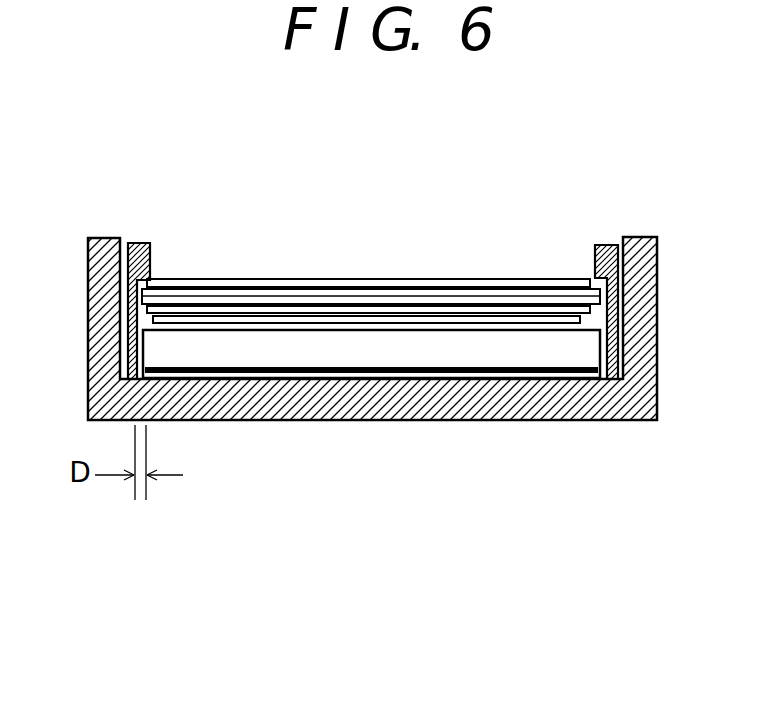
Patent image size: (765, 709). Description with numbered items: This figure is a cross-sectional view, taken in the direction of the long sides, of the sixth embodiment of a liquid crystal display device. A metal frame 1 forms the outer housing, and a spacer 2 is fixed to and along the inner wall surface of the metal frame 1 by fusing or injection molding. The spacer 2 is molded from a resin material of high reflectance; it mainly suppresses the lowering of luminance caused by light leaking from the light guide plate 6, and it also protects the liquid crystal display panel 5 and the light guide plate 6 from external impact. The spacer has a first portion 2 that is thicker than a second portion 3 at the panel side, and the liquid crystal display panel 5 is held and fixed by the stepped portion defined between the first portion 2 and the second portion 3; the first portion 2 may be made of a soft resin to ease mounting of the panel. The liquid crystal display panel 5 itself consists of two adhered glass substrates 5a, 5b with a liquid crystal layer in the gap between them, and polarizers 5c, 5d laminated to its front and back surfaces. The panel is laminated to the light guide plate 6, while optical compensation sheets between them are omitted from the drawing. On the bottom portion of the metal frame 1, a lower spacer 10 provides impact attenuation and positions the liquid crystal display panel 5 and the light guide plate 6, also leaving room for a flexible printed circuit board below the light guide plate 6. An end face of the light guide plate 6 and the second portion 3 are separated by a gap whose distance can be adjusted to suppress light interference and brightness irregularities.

The metal frame 1 is at (95, 240).
The spacer 2 is at (141, 244).
The second portion of the spacer 3 is at (128, 343).
The liquid crystal display panel 5 is at (371, 230).
The glass substrate 5a is at (388, 303).
The glass substrate 5b is at (440, 296).
The polarizer 5c is at (483, 313).
The polarizer 5d is at (540, 323).
The light guide plate 6 is at (195, 342).
The lower spacer 10 is at (400, 373).